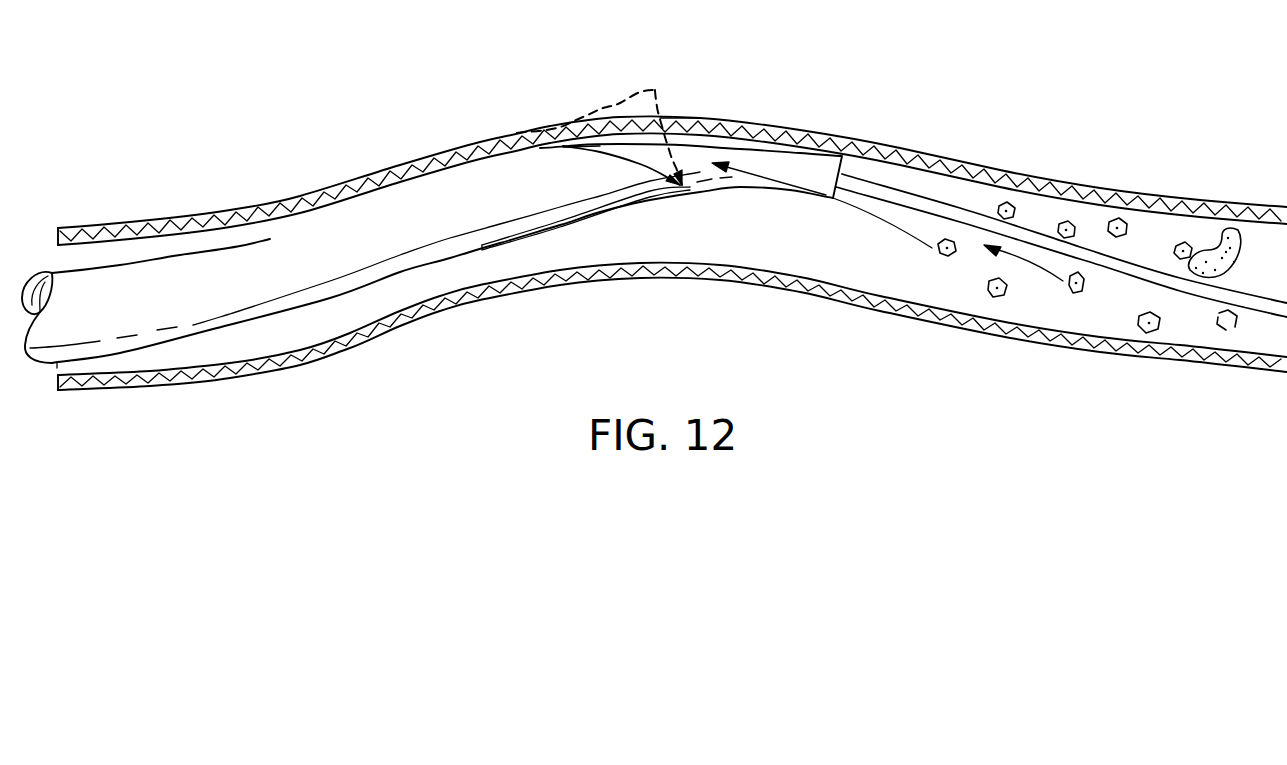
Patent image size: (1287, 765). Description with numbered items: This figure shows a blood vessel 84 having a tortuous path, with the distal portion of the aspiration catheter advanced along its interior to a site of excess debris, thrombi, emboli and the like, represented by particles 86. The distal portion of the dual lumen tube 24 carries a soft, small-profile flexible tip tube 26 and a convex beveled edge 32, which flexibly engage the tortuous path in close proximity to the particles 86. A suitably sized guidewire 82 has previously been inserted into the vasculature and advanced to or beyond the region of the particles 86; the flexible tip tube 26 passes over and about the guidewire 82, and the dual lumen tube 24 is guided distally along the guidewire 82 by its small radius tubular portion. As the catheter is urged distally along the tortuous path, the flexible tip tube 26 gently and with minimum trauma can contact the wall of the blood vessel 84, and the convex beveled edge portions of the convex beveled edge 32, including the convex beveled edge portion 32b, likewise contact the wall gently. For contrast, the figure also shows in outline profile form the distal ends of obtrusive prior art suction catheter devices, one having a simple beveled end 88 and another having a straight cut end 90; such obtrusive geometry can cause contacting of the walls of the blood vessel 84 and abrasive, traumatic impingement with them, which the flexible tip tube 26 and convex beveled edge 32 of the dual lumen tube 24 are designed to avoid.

The dual lumen tube 24 is at (241, 328).
The flexible tip tube 26 is at (802, 162).
The convex beveled edge 32 is at (565, 148).
The convex beveled edge portion 32b is at (584, 150).
The guidewire 82 is at (1135, 273).
The blood vessel 84 is at (977, 322).
The particles 86 is at (1066, 224).
The simple beveled end 88 is at (625, 142).
The straight cut end 90 is at (681, 120).